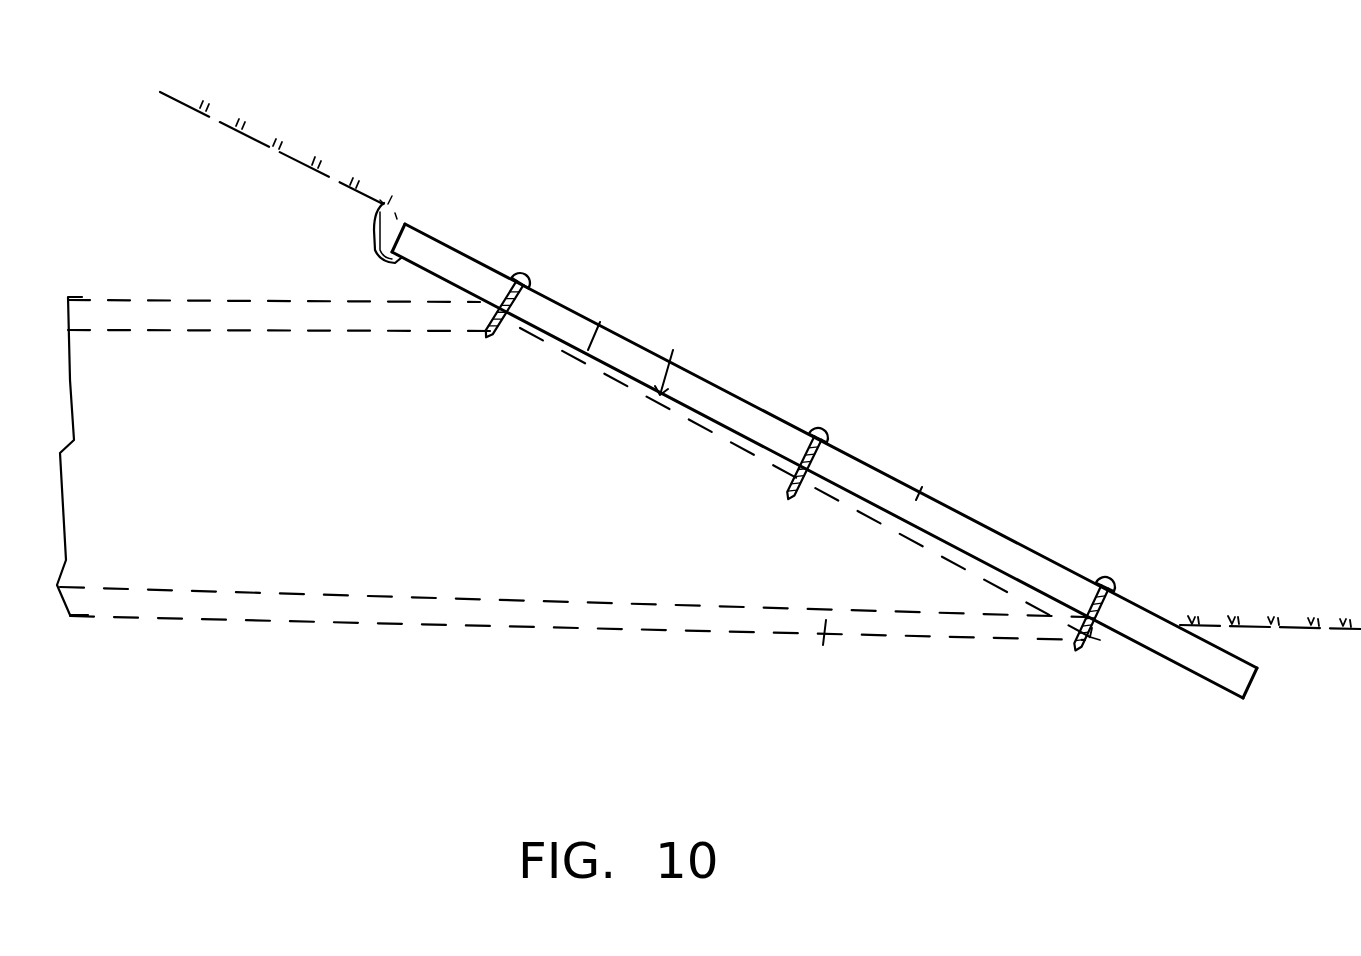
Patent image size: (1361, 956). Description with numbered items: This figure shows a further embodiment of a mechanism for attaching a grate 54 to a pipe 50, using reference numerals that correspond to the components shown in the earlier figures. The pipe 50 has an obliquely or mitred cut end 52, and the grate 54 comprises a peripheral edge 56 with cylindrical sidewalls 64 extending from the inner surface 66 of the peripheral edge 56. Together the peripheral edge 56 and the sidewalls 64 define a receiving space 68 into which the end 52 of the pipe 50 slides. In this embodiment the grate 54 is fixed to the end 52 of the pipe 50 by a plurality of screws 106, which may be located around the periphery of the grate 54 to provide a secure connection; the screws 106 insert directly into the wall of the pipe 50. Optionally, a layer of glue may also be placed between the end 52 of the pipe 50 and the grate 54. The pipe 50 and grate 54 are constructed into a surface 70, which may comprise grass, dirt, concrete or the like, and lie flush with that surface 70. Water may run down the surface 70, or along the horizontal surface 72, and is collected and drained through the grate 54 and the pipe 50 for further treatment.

The pipe 50 is at (297, 603).
The end of the pipe 52 is at (893, 595).
The grate 54 is at (976, 525).
The peripheral edge 56 is at (1057, 577).
The cylindrical sidewalls 64 is at (158, 310).
The inner surface 66 is at (389, 194).
The receiving space 68 is at (558, 405).
The surface 70 is at (240, 105).
The horizontal surface 72 is at (1302, 612).
The screws 106 is at (513, 265).